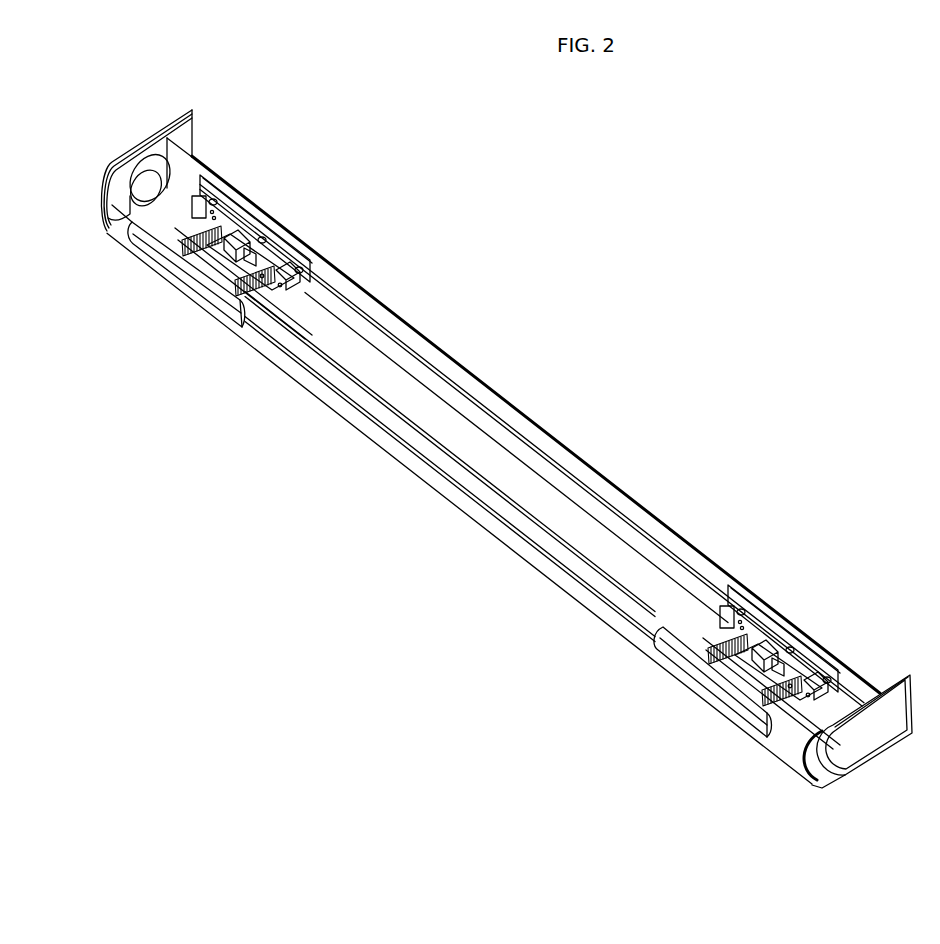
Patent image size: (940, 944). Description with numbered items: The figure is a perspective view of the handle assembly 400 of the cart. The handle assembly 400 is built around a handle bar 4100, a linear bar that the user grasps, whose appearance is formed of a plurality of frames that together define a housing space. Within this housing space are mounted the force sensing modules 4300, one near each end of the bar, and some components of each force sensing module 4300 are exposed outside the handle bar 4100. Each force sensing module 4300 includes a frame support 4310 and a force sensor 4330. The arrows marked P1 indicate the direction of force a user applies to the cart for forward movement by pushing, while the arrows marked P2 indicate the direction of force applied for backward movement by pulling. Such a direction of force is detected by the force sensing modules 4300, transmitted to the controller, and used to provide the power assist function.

The handle assembly 400 is at (815, 259).
The handle bar 4100 is at (589, 448).
The force sensing module 4300 is at (268, 430).
The frame support 4310 is at (216, 296).
The force sensor 4330 is at (264, 293).
The forward force direction P1 is at (181, 275).
The backward force direction P2 is at (294, 205).